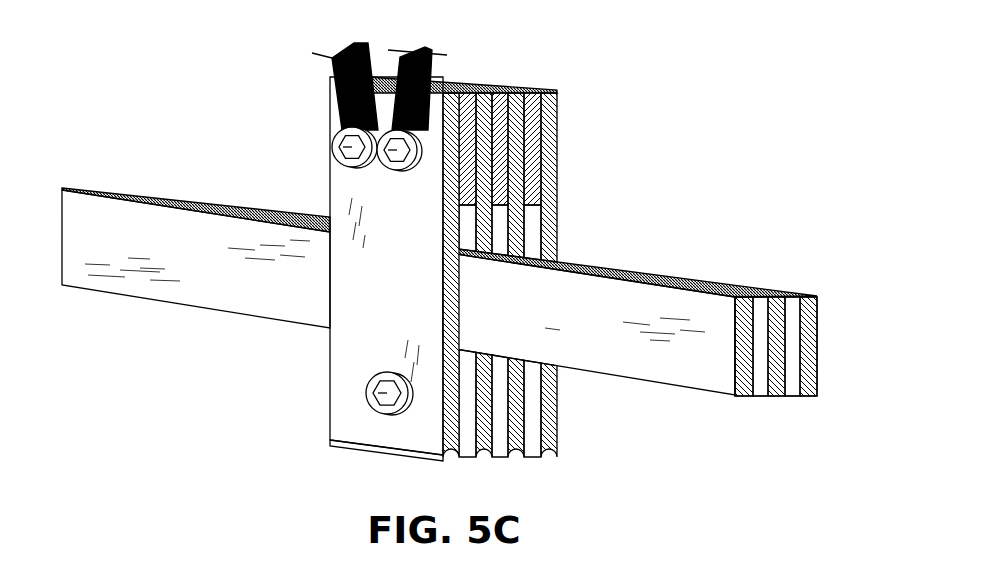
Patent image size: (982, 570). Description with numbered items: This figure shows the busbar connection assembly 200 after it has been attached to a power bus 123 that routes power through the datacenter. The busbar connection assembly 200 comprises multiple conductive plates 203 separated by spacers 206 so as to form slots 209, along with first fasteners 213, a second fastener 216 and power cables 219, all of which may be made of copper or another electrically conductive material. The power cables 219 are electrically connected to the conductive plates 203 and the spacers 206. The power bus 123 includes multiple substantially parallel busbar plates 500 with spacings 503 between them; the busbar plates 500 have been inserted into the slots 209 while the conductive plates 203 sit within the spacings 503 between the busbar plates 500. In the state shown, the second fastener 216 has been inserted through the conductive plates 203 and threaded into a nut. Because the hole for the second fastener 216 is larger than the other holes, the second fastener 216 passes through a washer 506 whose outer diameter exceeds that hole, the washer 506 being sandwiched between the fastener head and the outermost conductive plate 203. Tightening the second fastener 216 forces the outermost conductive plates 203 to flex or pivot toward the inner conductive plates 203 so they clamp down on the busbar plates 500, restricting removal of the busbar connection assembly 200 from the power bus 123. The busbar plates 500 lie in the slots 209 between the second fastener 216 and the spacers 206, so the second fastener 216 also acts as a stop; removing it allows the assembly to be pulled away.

The power bus 123 is at (170, 322).
The busbar connection assembly 200 is at (272, 108).
The conductive plates 203 is at (493, 287).
The spacers 206 is at (467, 170).
The slots 209 is at (477, 420).
The first fasteners 213 is at (397, 150).
The second fastener 216 is at (385, 393).
The power cables 219 is at (410, 53).
The busbar plates 500 is at (746, 354).
The spacings 503 is at (798, 380).
The washer 506 is at (387, 412).